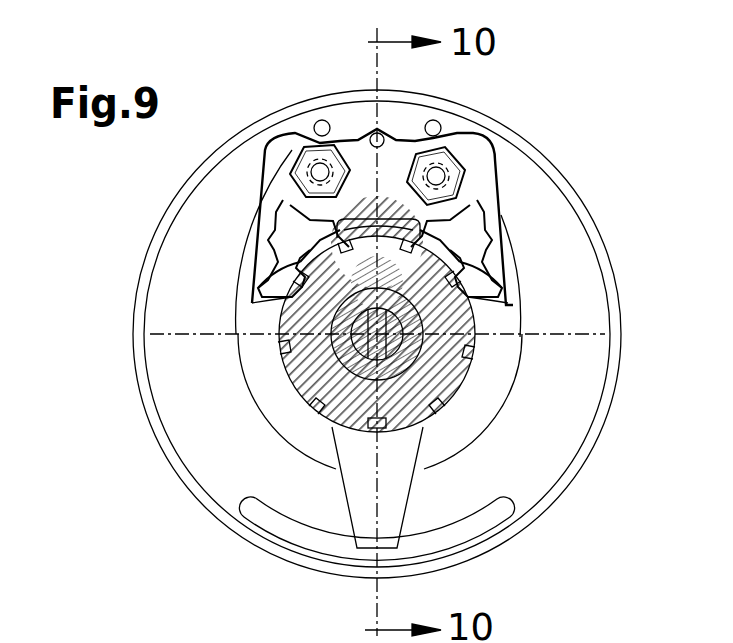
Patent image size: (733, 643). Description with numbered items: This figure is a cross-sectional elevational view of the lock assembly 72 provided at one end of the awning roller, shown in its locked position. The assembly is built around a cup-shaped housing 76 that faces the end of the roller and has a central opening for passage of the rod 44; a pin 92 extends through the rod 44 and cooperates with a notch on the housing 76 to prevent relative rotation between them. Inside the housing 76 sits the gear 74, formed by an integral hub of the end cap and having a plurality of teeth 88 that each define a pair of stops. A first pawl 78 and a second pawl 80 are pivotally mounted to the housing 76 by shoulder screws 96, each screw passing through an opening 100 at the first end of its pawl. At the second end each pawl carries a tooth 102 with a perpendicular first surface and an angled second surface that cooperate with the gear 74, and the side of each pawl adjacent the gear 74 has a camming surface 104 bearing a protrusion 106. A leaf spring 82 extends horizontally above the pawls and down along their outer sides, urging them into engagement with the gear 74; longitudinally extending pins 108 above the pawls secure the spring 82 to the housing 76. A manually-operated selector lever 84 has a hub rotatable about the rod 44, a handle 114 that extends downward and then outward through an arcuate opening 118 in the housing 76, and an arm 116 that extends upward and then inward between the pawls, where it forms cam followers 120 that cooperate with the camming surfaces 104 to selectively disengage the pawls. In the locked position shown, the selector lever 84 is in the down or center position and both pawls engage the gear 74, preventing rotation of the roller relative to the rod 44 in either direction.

The lock assembly 72 is at (128, 275).
The housing 76 is at (172, 477).
The opening 118 is at (278, 535).
The selector lever 84 is at (408, 484).
The handle 114 is at (405, 513).
The gear 74 is at (463, 377).
The teeth 88 is at (463, 400).
The pin 92 is at (415, 335).
The rod 44 is at (395, 350).
The spring 82 is at (490, 165).
The opening 100 is at (321, 118).
The arm 116 is at (403, 146).
The pins 108 is at (433, 120).
The shoulder screws 96 is at (335, 143).
The first pawl 78 is at (292, 168).
The second pawl 80 is at (470, 197).
The cam followers 120 is at (290, 167).
The camming surface 104 is at (340, 226).
The protrusion 106 is at (272, 267).
The tooth 102 is at (255, 306).